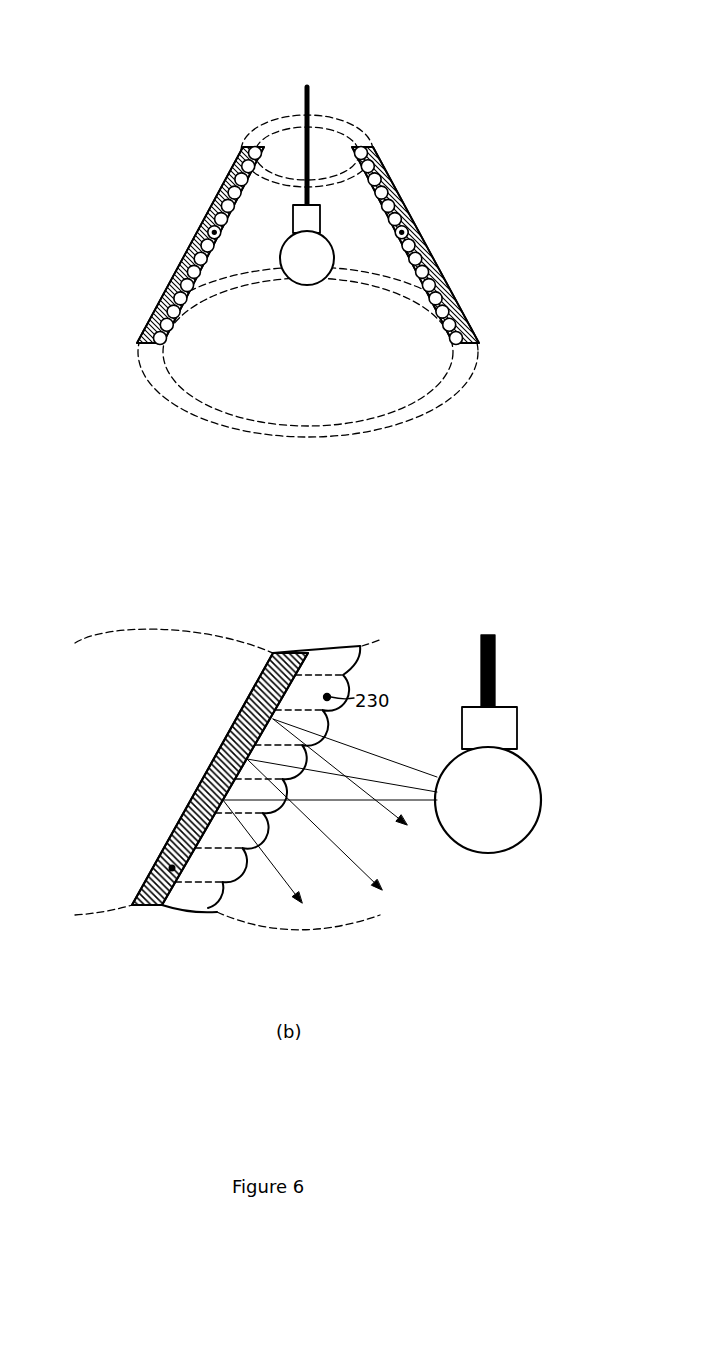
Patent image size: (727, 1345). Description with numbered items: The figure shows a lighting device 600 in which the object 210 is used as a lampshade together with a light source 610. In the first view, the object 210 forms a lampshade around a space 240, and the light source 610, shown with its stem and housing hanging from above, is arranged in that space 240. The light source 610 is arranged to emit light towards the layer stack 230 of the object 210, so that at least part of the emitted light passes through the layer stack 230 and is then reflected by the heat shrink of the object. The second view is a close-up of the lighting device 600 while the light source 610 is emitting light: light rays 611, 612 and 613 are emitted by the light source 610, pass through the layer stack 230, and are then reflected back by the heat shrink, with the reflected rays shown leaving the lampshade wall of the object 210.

The lighting device 600 is at (336, 79).
The object 210 is at (193, 147).
The layer stack 230 is at (222, 232).
The space 240 is at (325, 323).
The light source 610 is at (325, 271).
The light ray 611 is at (373, 755).
The light ray 612 is at (362, 868).
The light ray 613 is at (313, 861).